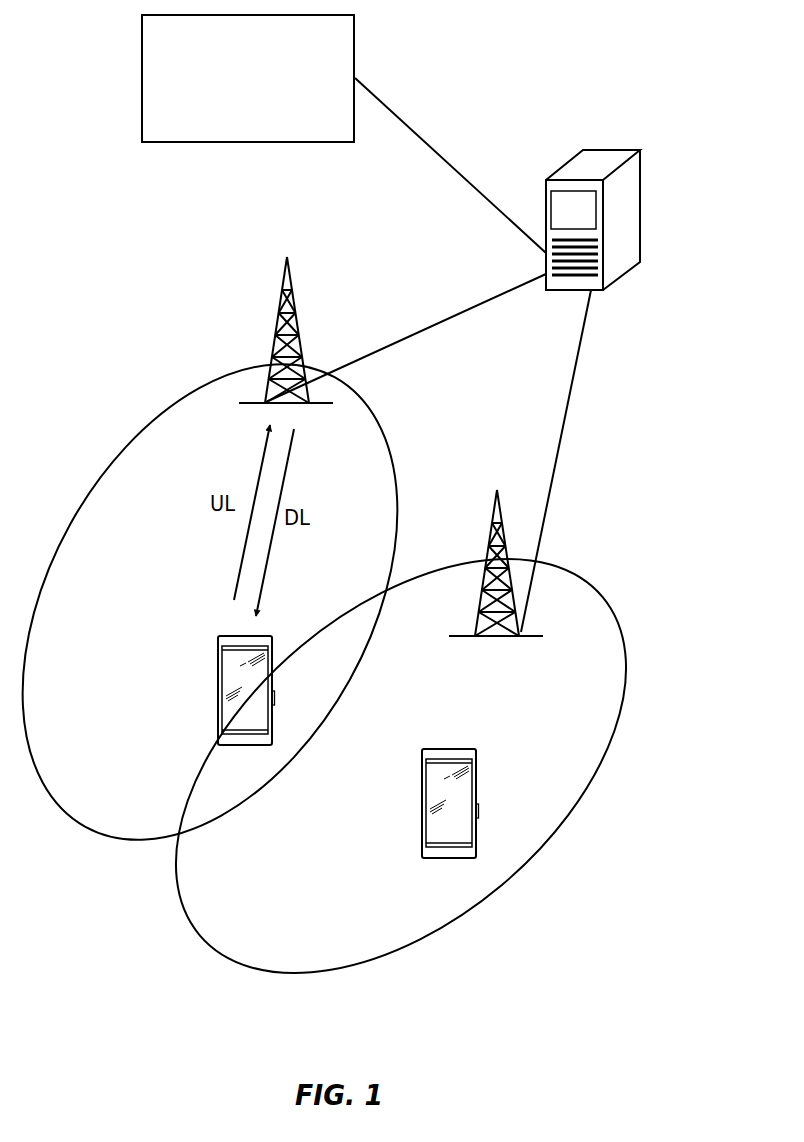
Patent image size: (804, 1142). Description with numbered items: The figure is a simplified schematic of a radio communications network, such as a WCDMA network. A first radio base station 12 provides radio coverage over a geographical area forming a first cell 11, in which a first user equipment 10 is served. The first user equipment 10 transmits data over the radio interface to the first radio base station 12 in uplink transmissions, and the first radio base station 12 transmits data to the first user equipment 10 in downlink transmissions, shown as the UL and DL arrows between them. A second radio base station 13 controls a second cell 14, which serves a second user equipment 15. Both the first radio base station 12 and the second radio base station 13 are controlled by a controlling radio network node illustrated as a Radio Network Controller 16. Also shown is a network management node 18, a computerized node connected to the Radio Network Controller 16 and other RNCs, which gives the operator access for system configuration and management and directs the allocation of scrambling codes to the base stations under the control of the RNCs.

The first user equipment 10 is at (218, 668).
The first cell 11 is at (91, 724).
The first radio base station 12 is at (303, 342).
The second radio base station 13 is at (490, 537).
The second cell 14 is at (335, 932).
The second user equipment 15 is at (478, 775).
The Radio Network Controller 16 is at (622, 206).
The network management node 18 is at (238, 126).